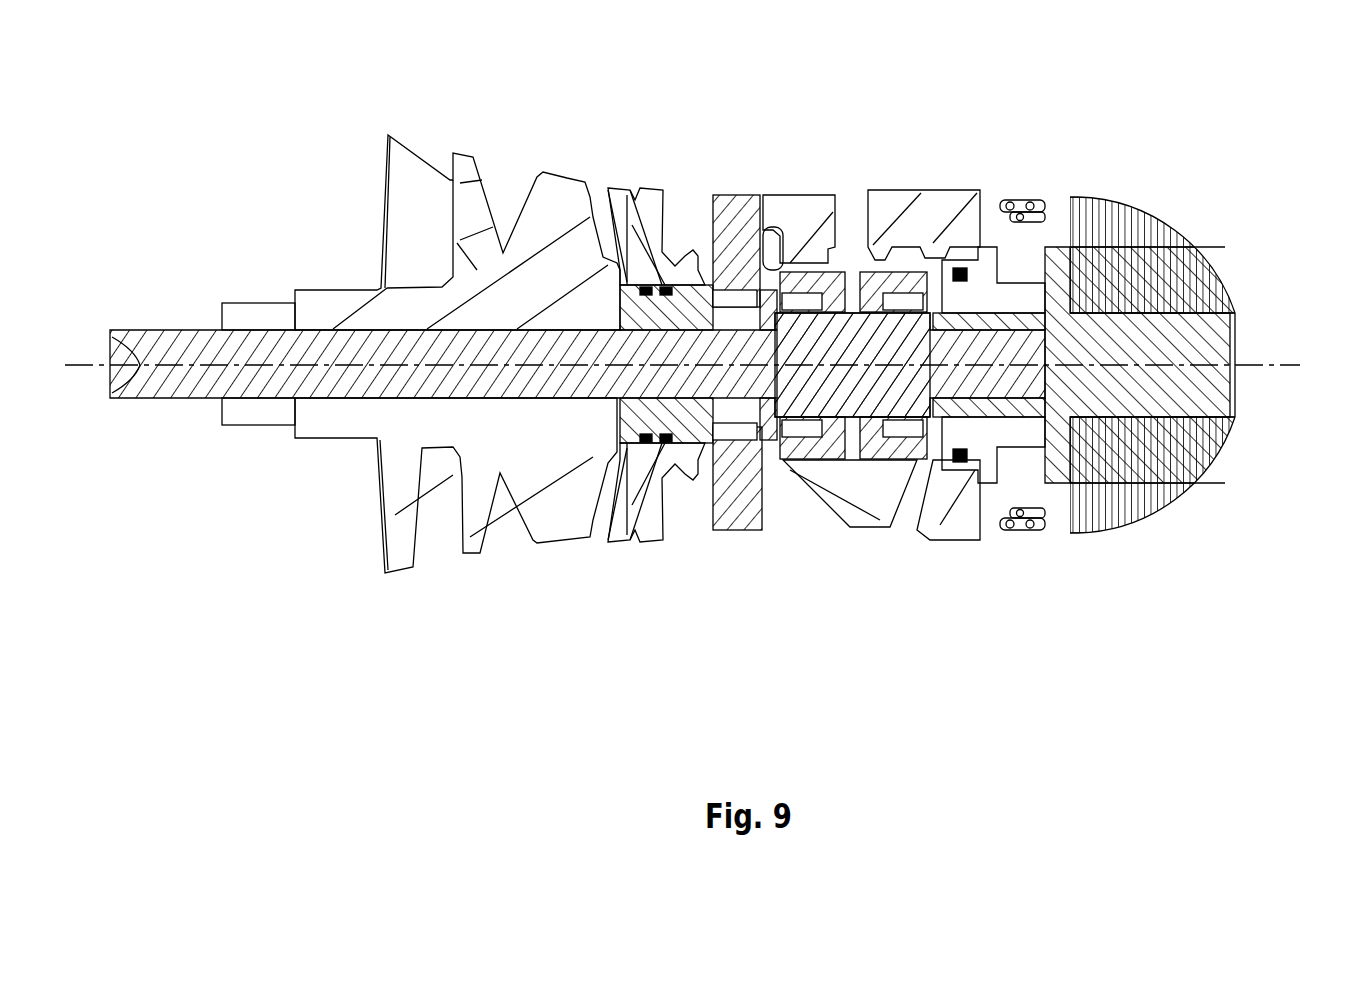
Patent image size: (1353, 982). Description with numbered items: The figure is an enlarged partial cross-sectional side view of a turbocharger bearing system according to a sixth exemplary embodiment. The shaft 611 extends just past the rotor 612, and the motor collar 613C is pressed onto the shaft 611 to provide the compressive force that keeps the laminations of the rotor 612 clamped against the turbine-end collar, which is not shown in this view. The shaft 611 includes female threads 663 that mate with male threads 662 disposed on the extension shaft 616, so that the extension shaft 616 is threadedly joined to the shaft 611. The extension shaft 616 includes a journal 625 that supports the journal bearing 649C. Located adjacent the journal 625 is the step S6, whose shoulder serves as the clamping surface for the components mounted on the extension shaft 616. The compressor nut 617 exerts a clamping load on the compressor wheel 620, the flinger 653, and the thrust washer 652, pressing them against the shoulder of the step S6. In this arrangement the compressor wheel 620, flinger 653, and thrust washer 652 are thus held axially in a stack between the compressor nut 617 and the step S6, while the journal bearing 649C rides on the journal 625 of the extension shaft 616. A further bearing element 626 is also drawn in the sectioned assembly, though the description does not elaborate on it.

The extension shaft 616 is at (175, 350).
The compressor nut 617 is at (262, 308).
The compressor wheel 620 is at (445, 183).
The flinger 653 is at (656, 290).
The thrust washer 652 is at (764, 292).
The journal bearing 649C is at (818, 215).
The bearing assembly 626 is at (975, 266).
The motor collar 613C is at (988, 247).
The female threads 663 is at (1055, 222).
The shaft 611 is at (1117, 347).
The rotor 612 is at (1212, 450).
The male threads 662 is at (1012, 412).
The journal 625 is at (816, 324).
The step S6 is at (767, 413).